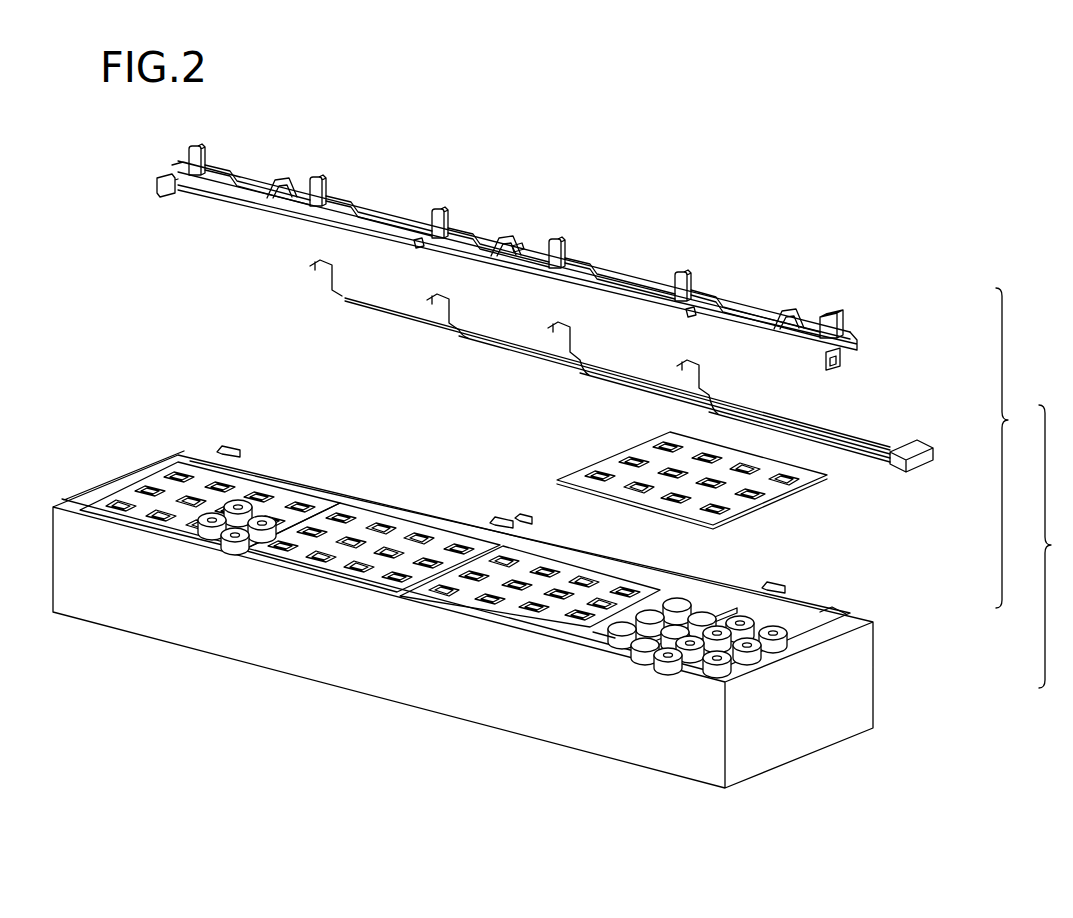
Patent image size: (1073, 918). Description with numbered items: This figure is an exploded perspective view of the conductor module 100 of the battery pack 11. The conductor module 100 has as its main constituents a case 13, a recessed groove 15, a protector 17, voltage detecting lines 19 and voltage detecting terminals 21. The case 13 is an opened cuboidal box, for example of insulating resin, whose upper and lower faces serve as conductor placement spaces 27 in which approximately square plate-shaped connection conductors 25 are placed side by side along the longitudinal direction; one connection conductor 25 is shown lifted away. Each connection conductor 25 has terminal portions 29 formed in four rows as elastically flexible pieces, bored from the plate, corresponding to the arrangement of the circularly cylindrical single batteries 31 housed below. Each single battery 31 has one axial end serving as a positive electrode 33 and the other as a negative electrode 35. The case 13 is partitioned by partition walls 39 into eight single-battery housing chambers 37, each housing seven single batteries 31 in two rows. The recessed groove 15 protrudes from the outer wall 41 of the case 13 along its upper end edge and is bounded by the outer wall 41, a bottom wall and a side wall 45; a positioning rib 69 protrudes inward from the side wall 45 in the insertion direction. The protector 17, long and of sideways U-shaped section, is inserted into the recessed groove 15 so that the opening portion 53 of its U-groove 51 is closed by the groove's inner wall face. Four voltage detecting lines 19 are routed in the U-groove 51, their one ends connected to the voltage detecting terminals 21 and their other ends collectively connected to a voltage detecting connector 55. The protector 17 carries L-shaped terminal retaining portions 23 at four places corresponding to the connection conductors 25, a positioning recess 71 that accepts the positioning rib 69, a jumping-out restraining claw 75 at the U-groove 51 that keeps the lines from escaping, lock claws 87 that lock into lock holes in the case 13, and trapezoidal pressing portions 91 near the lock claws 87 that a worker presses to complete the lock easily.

The battery pack 11 is at (1053, 546).
The case 13 is at (876, 628).
The recessed groove 15 is at (828, 615).
The protector 17 is at (573, 246).
The voltage detecting lines 19 is at (639, 365).
The voltage detecting terminals 21 is at (318, 262).
The terminal retaining portions 23 is at (345, 192).
The connection conductors 25 is at (250, 488).
The conductor placement space 27 is at (140, 490).
The terminal portions 29 is at (640, 487).
The single batteries 31 is at (212, 540).
The positive electrode 33 is at (215, 518).
The negative electrode 35 is at (620, 637).
The single-battery housing chambers 37 is at (250, 517).
The partition walls 39 is at (200, 535).
The outer wall 41 is at (368, 500).
The side wall 45 is at (322, 475).
The U-groove 51 is at (652, 300).
The opening portion 53 is at (262, 204).
The voltage detecting connector 55 is at (920, 472).
The positioning rib 69 is at (522, 520).
The positioning recess 71 is at (519, 245).
The jumping-out restraining claw 75 is at (418, 243).
The lock claw 87 is at (291, 184).
The pressing portion 91 is at (283, 178).
The conductor module 100 is at (1018, 448).